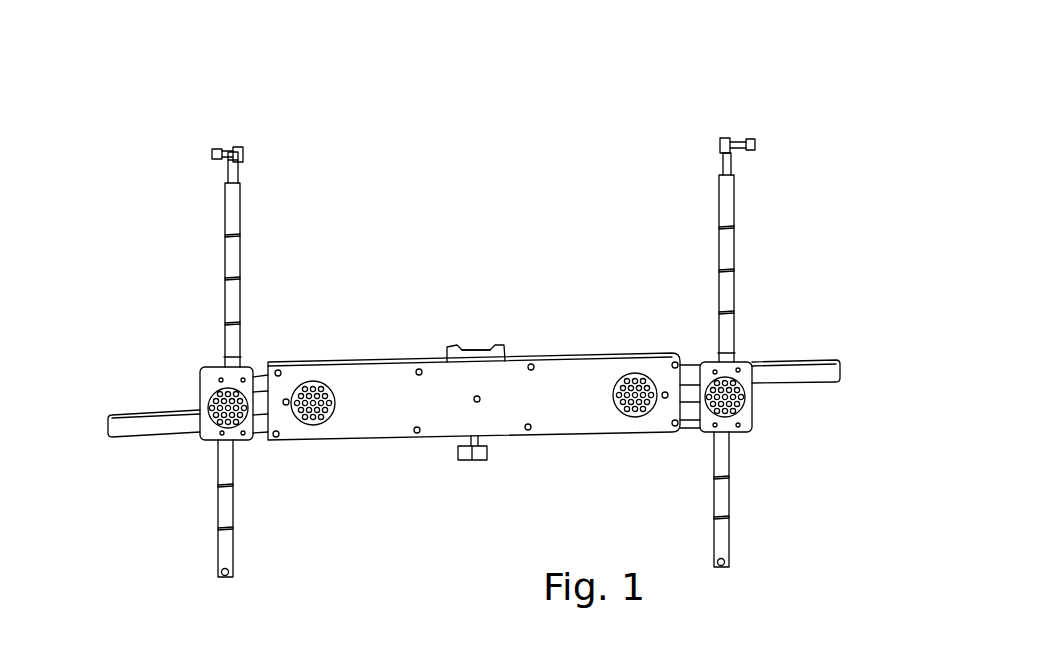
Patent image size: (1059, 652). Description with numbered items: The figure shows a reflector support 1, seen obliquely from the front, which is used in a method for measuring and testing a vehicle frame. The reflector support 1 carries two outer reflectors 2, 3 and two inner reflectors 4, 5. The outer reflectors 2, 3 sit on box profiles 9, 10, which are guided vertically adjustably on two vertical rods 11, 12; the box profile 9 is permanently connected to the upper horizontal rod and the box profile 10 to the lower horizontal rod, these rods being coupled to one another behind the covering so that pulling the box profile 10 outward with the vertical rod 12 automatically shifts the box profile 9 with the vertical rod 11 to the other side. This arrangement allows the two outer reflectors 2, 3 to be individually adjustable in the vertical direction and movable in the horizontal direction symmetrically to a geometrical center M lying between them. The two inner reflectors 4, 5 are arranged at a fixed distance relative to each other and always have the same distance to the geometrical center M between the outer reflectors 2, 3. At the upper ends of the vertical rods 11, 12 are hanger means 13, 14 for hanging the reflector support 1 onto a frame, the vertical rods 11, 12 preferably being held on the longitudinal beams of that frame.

The reflector support 1 is at (652, 103).
The outer reflector 2 is at (222, 420).
The outer reflector 3 is at (740, 410).
The inner reflector 4 is at (327, 418).
The inner reflector 5 is at (638, 405).
The box profile 9 is at (212, 382).
The box profile 10 is at (745, 365).
The vertical rod 11 is at (228, 300).
The vertical rod 12 is at (730, 247).
The hanger means 13 is at (232, 150).
The hanger means 14 is at (740, 150).
The geometrical center M is at (477, 399).